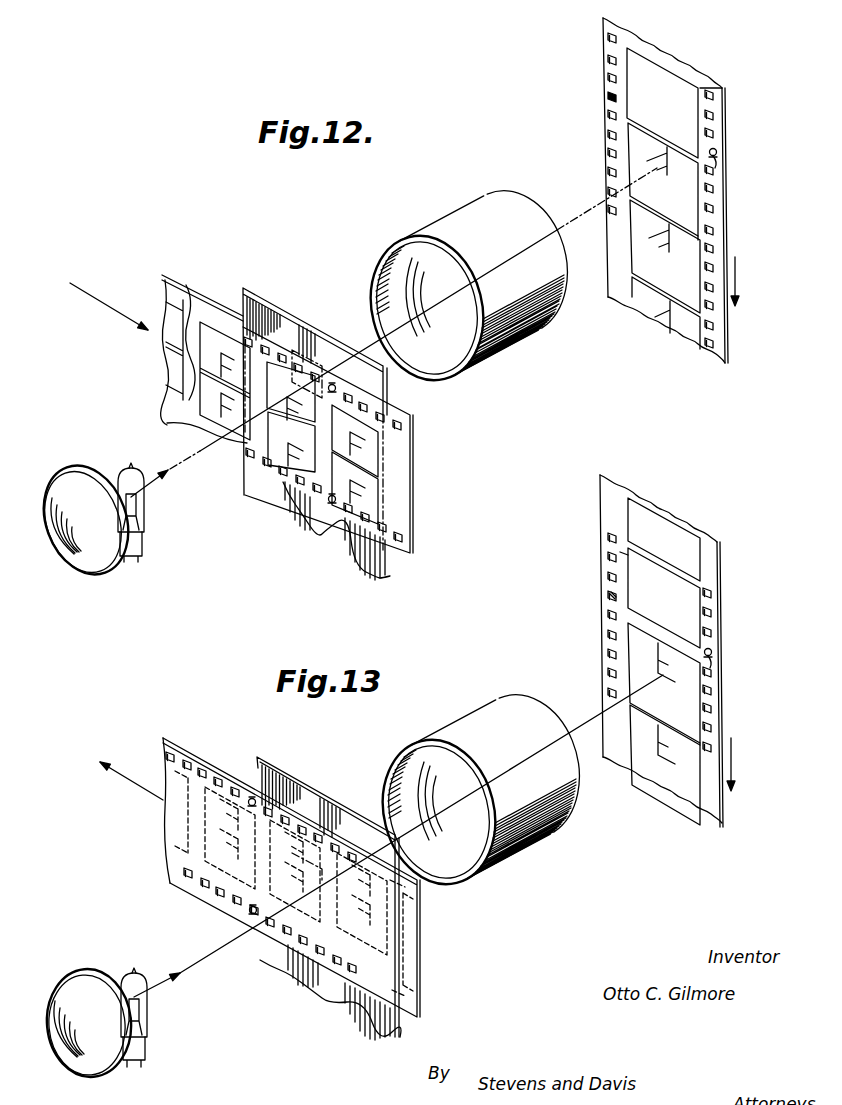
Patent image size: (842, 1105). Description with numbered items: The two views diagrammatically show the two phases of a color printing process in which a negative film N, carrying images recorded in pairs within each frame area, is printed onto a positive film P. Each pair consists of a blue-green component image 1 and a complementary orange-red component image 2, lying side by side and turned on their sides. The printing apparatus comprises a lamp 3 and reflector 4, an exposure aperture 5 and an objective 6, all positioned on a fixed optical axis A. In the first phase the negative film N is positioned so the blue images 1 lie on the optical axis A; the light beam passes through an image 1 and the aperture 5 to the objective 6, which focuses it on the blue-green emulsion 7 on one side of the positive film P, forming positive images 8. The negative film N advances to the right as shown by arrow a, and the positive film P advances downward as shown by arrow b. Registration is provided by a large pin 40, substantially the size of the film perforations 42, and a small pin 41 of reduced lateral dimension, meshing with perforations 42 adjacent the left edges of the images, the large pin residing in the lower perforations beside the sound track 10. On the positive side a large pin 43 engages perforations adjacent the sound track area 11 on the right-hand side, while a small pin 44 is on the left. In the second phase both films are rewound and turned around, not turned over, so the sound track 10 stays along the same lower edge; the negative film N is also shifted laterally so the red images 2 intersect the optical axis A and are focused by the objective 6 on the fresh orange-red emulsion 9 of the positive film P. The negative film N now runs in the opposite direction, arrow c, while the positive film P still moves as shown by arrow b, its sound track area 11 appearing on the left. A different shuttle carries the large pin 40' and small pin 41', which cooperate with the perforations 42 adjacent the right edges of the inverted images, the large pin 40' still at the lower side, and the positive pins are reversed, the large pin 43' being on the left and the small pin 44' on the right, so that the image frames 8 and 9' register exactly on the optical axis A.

In FIG. 12, the blue-green component image 1 is at (187, 302).
In FIG. 13, the blue-green component image 1 is at (405, 890).
In FIG. 12, the orange-red component image 2 is at (197, 427).
In FIG. 13, the orange-red component image 2 is at (416, 997).
In FIG. 12, the lamp 3 is at (131, 468).
In FIG. 13, the lamp 3 is at (136, 972).
In FIG. 12, the reflector 4 is at (83, 470).
In FIG. 13, the reflector 4 is at (92, 972).
In FIG. 12, the exposure aperture 5 is at (313, 346).
In FIG. 13, the exposure aperture 5 is at (330, 853).
In FIG. 12, the objective 6 is at (400, 237).
In FIG. 13, the objective 6 is at (436, 721).
In FIG. 12, the blue-green emulsion 7 is at (636, 147).
In FIG. 12, the positive image 8 is at (700, 240).
In FIG. 13, the orange-red emulsion 9 is at (637, 683).
In FIG. 13, the image frame 9' is at (728, 731).
In FIG. 12, the sound track 10 is at (404, 530).
In FIG. 13, the sound track 10 is at (188, 860).
In FIG. 12, the sound track area 11 is at (700, 86).
In FIG. 13, the sound track area 11 is at (622, 552).
In FIG. 12, the large pin 40 is at (319, 538).
In FIG. 13, the large pin 40' is at (228, 921).
In FIG. 12, the small pin 41 is at (373, 382).
In FIG. 13, the small pin 41' is at (241, 772).
In FIG. 12, the film perforations 42 is at (282, 476).
In FIG. 13, the film perforations 42 is at (290, 932).
In FIG. 12, the large pin 43 is at (736, 156).
In FIG. 13, the large pin 43' is at (588, 601).
In FIG. 12, the small pin 44 is at (594, 83).
In FIG. 13, the small pin 44' is at (735, 657).
In FIG. 12, the arrow a is at (109, 301).
In FIG. 12, the arrow b is at (737, 286).
In FIG. 13, the arrow b is at (733, 766).
In FIG. 13, the arrow c is at (131, 769).
In FIG. 12, the optical axis A is at (178, 482).
In FIG. 13, the optical axis A is at (200, 960).
In FIG. 12, the negative film N is at (173, 398).
In FIG. 12, the positive film P is at (660, 58).
In FIG. 13, the positive film P is at (600, 497).